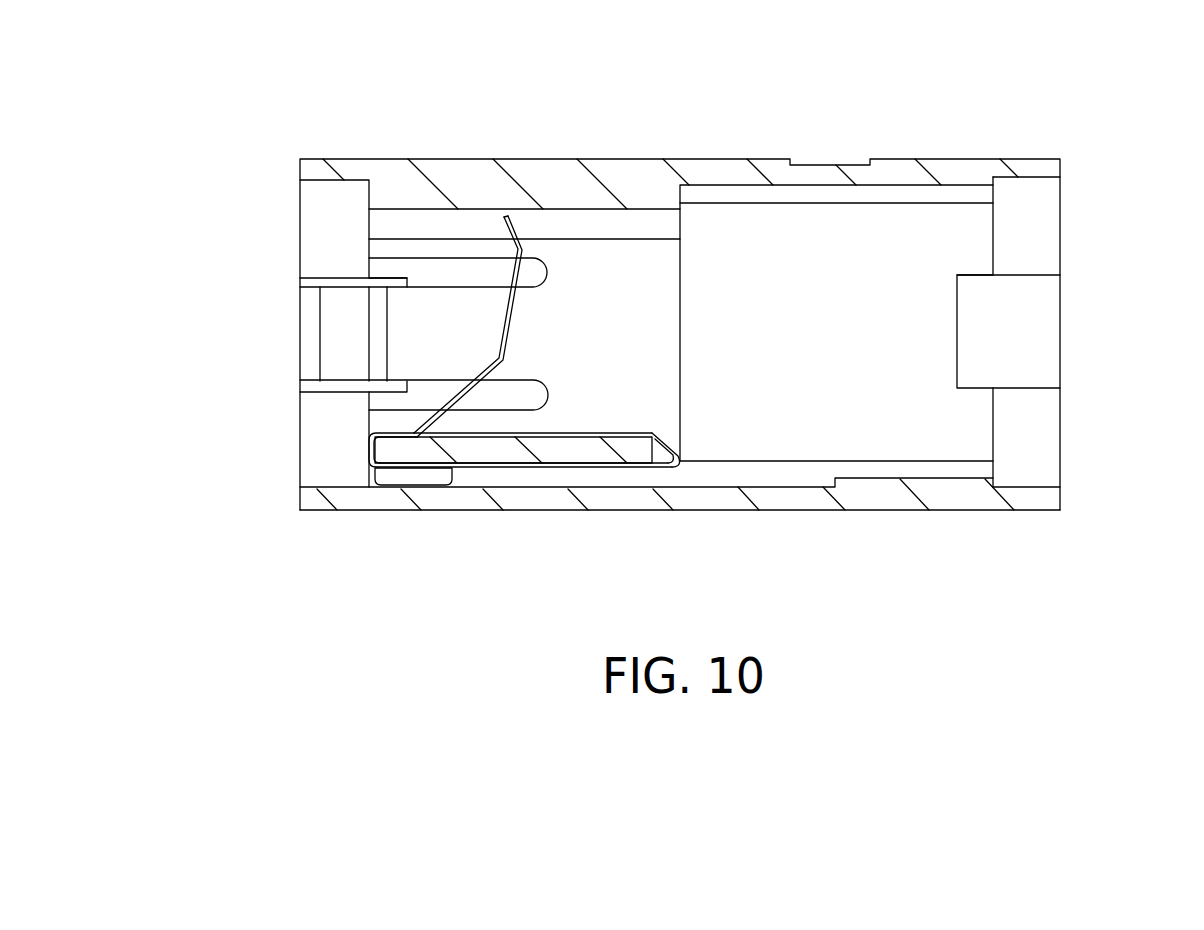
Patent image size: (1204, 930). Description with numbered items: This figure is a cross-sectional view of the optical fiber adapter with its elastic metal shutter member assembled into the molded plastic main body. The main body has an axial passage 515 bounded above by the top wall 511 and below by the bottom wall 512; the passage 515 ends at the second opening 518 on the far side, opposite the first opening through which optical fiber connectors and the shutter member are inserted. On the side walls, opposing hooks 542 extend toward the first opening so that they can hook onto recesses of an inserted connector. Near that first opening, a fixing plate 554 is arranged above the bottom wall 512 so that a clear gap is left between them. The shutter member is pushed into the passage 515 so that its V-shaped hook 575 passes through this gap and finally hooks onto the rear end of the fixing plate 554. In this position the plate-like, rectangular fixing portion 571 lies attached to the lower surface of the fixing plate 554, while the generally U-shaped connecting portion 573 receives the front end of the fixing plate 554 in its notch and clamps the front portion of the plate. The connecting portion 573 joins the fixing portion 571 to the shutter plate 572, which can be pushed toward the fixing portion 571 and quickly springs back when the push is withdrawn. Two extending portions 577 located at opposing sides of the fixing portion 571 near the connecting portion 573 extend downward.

The top wall 511 is at (628, 158).
The bottom wall 512 is at (664, 510).
The passage 515 is at (618, 313).
The second opening 518 is at (1020, 330).
The hook 542 is at (344, 318).
The fixing plate 554 is at (504, 450).
The fixing portion 571 is at (578, 467).
The shutter plate 572 is at (506, 293).
The connecting portion 573 is at (372, 448).
The V-shaped hook 575 is at (668, 462).
The extending portion 577 is at (412, 476).